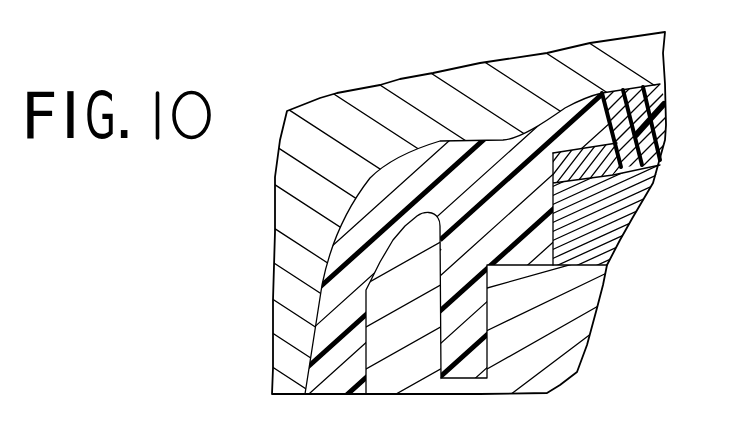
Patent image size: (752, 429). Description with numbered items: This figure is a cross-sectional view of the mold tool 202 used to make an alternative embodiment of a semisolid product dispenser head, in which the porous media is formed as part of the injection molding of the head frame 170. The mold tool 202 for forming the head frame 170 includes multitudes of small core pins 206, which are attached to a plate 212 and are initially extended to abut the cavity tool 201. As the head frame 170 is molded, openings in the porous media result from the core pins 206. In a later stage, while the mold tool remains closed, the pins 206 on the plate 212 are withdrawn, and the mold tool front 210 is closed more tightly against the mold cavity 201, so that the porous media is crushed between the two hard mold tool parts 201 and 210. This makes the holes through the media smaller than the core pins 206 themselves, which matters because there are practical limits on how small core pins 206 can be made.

The cavity tool 201 is at (290, 172).
The head frame 170 is at (323, 338).
The mold tool front 210 is at (582, 147).
The core pins 206 is at (664, 98).
The mold tool 202 is at (697, 160).
The plate 212 is at (615, 212).